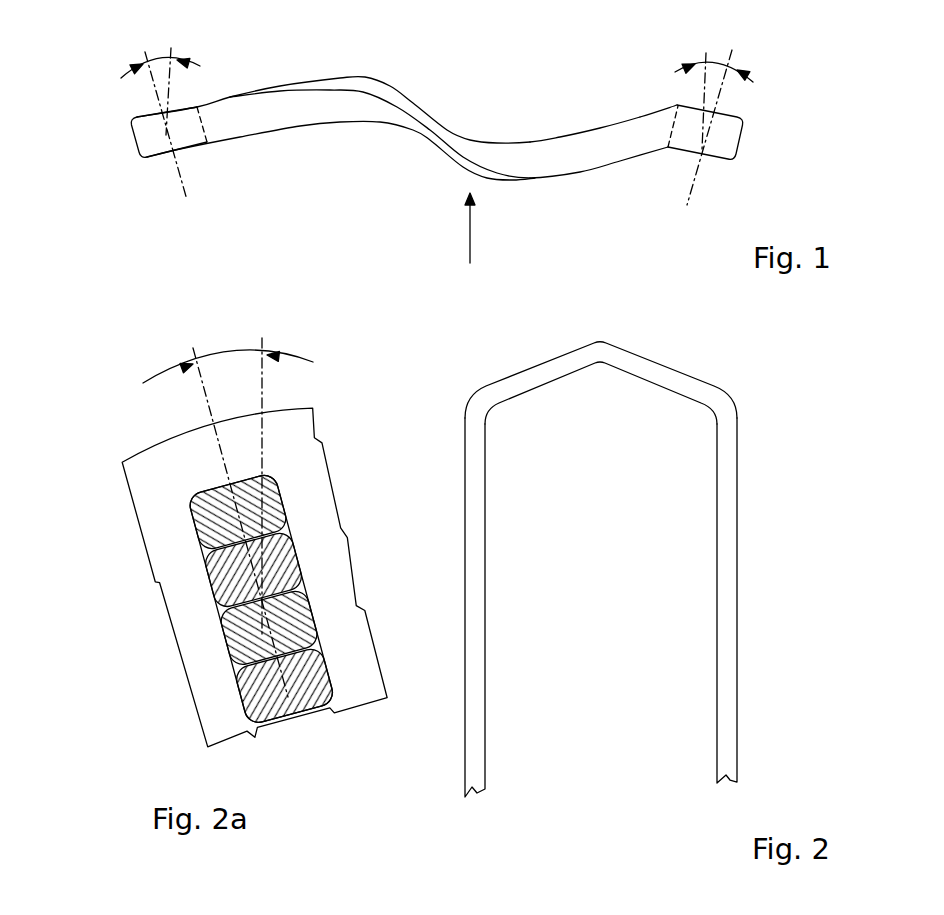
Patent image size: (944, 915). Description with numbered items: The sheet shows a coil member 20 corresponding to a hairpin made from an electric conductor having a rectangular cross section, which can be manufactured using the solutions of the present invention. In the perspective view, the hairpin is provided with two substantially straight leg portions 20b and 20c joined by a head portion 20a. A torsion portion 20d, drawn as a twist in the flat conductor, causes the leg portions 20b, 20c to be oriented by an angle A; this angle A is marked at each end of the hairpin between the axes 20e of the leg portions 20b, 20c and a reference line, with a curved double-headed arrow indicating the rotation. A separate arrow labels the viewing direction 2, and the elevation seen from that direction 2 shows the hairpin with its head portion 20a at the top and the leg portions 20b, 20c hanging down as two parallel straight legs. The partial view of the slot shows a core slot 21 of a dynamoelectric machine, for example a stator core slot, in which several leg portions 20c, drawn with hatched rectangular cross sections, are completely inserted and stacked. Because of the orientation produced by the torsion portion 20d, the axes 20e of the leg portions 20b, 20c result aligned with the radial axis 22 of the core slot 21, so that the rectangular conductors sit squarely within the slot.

In FIG. 1, the viewing direction 2 is at (470, 238).
In FIG. 1, the coil member 20 is at (462, 112).
In FIG. 1, the head portion 20a is at (570, 145).
In FIG. 2, the head portion 20a is at (593, 343).
In FIG. 1, the leg portion 20b is at (132, 143).
In FIG. 2, the leg portion 20b is at (465, 747).
In FIG. 1, the leg portion 20c is at (740, 143).
In FIG. 2, the leg portion 20c is at (737, 585).
In FIG. 2A, the leg portion 20c is at (287, 497).
In FIG. 1, the torsion portion 20d is at (677, 100).
In FIG. 1, the axis of leg portion 20e is at (185, 183).
In FIG. 2A, the core slot 21 is at (197, 556).
In FIG. 2A, the radial axis 22 is at (205, 397).
In FIG. 1, the angle A is at (158, 52).
In FIG. 2A, the angle A is at (227, 353).